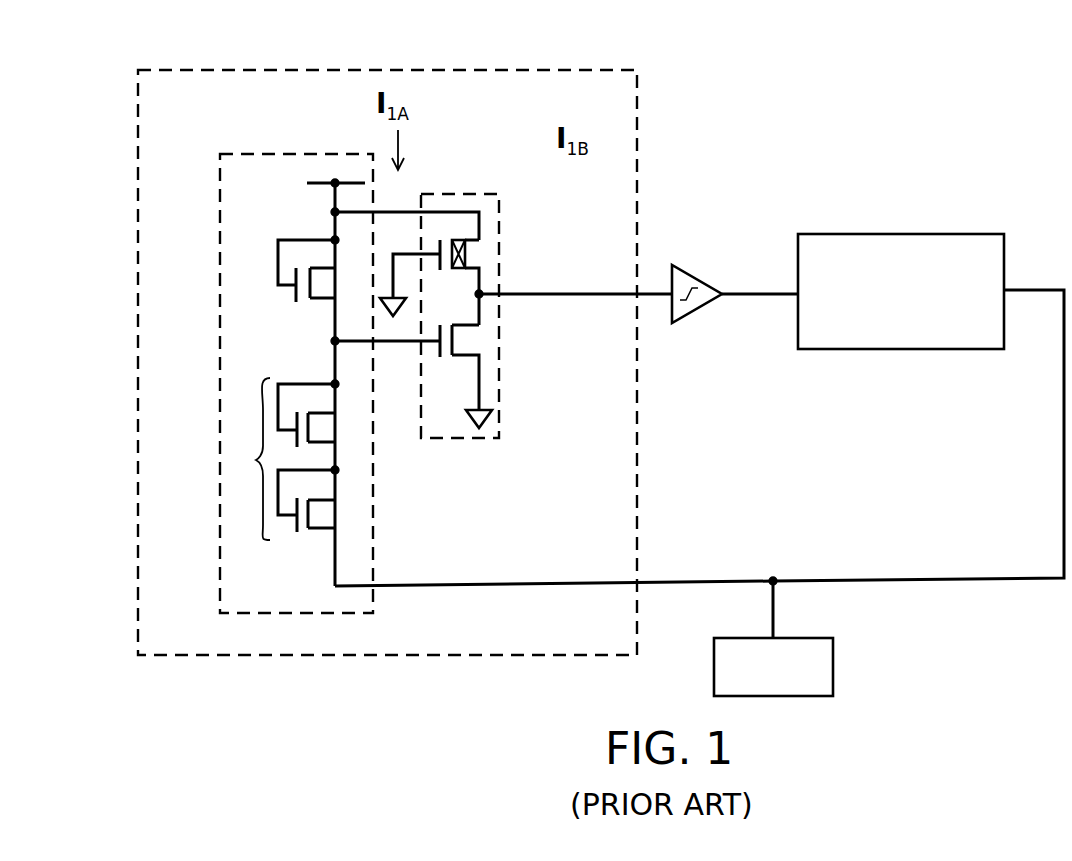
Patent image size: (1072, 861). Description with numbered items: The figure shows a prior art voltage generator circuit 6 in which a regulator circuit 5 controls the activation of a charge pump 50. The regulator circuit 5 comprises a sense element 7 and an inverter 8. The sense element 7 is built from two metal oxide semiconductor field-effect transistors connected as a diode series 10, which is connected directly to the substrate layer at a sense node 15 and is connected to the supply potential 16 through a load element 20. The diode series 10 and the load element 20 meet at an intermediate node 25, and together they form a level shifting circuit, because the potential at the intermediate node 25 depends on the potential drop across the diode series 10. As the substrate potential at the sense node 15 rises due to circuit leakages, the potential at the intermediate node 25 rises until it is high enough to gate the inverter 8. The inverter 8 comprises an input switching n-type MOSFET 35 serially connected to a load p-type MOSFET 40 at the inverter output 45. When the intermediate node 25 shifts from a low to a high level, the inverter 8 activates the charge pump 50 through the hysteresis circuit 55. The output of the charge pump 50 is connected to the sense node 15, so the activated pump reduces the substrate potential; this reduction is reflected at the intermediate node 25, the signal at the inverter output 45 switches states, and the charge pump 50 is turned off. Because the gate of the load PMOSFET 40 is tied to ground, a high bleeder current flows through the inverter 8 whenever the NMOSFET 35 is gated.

The regulator circuit 5 is at (250, 68).
The voltage generator circuit 6 is at (690, 175).
The sense element 7 is at (218, 232).
The inverter 8 is at (462, 193).
The diode series 10 is at (256, 460).
The sense node 15 is at (774, 578).
The VCC 16 is at (331, 180).
The load element 20 is at (320, 283).
The intermediate node 25 is at (335, 341).
The input switching NMOSFET 35 is at (480, 340).
The load PMOSFET 40 is at (468, 252).
The inverter output 45 is at (482, 292).
The charge pump 50 is at (901, 291).
The hysteresis circuit 55 is at (700, 300).